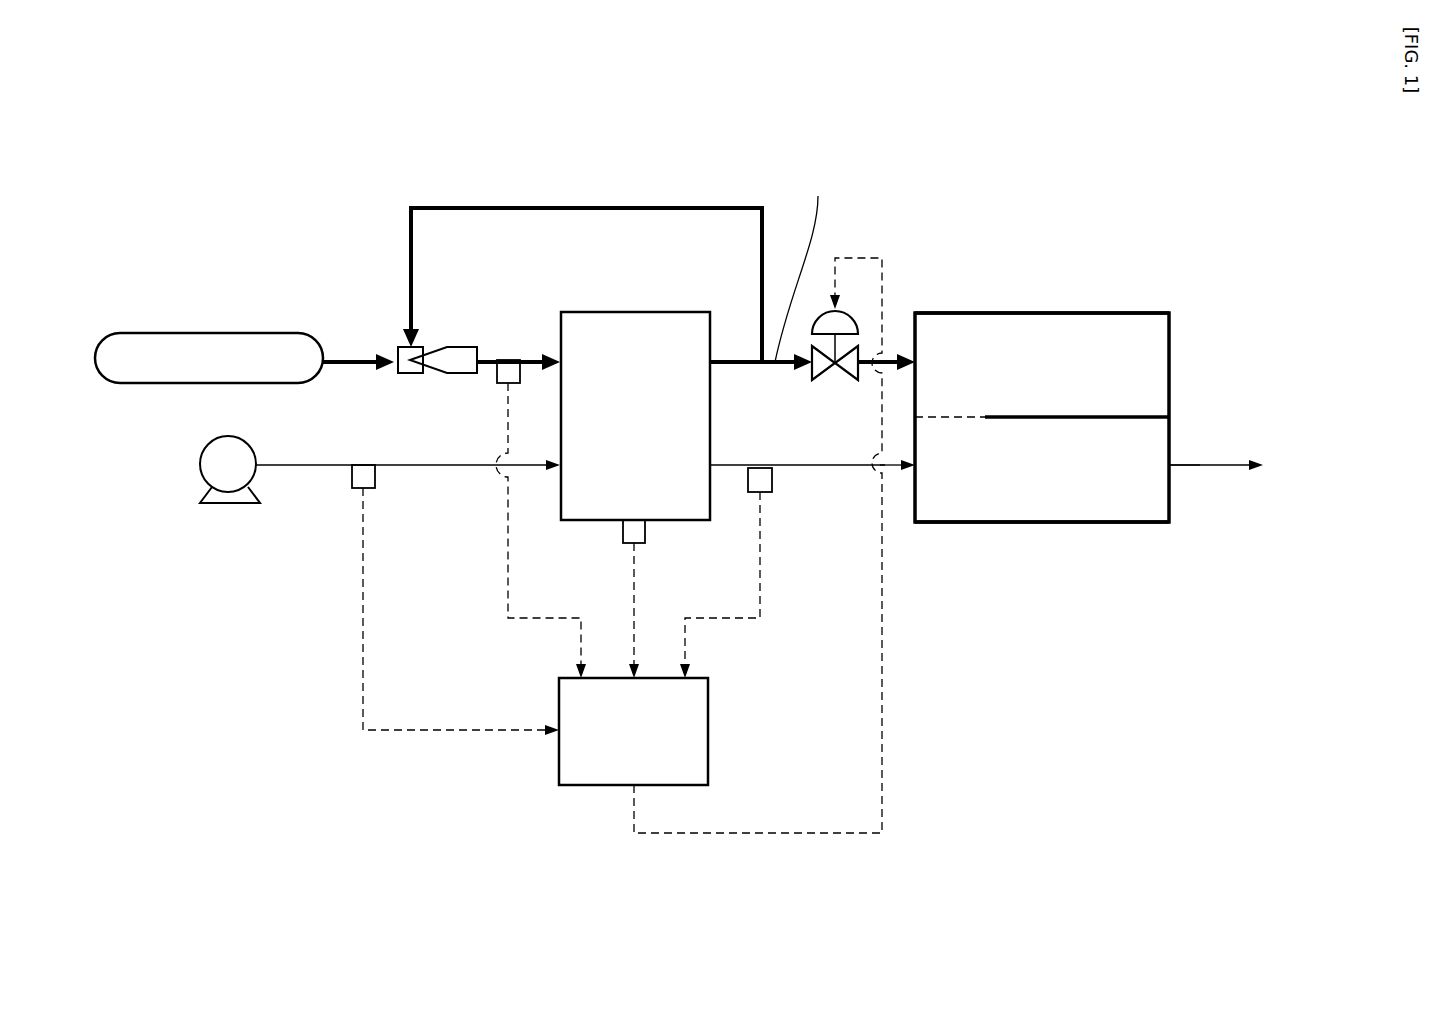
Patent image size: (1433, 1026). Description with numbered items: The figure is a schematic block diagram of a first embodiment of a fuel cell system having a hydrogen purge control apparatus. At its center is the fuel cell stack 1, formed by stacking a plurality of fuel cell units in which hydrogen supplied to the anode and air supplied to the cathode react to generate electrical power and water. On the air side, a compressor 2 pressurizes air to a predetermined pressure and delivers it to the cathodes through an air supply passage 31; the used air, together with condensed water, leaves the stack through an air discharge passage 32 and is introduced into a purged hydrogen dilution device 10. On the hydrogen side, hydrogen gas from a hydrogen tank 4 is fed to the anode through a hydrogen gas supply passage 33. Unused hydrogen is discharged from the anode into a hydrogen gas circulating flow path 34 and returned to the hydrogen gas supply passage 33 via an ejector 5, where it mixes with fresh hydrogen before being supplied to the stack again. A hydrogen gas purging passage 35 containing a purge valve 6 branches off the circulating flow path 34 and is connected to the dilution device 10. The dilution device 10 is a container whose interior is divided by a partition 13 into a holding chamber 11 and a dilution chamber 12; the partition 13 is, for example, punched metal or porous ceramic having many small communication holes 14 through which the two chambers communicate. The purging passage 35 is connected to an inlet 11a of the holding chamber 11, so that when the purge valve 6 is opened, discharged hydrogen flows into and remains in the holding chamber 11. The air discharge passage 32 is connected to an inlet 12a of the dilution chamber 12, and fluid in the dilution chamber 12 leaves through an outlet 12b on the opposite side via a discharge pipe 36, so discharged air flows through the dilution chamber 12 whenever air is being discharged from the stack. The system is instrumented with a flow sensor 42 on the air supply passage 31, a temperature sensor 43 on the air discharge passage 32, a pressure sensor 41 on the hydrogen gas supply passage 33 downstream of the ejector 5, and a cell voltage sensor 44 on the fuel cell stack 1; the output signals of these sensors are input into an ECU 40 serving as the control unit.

The fuel cell stack 1 is at (633, 311).
The compressor 2 is at (254, 448).
The hydrogen tank 4 is at (230, 333).
The ejector 5 is at (406, 374).
The purge valve 6 is at (840, 381).
The purged hydrogen dilution device 10 is at (1052, 312).
The holding chamber 11 is at (1110, 330).
The inlet 11a is at (912, 358).
The dilution chamber 12 is at (1048, 495).
The inlet 12a is at (910, 472).
The outlet 12b is at (1170, 465).
The partition 13 is at (1125, 416).
The communication holes 14 is at (958, 419).
The air supply passage 31 is at (422, 470).
The air discharge passage 32 is at (818, 468).
The hydrogen gas supply passage 33 is at (356, 358).
The hydrogen gas circulating flow path 34 is at (607, 206).
The hydrogen gas purging passage 35 is at (777, 366).
The discharge pipe 36 is at (1218, 470).
The ECU 40 is at (710, 732).
The pressure sensor 41 is at (497, 372).
The flow sensor 42 is at (352, 472).
The temperature sensor 43 is at (750, 478).
The cell voltage sensor 44 is at (624, 532).